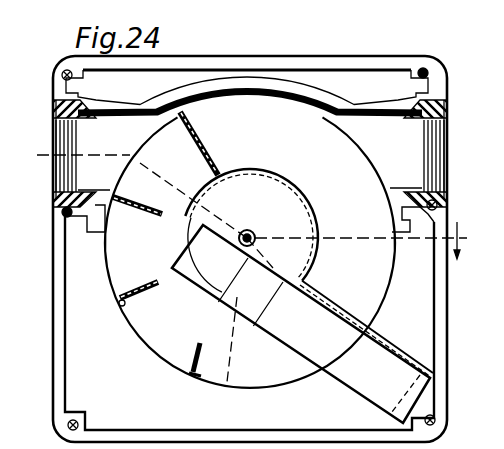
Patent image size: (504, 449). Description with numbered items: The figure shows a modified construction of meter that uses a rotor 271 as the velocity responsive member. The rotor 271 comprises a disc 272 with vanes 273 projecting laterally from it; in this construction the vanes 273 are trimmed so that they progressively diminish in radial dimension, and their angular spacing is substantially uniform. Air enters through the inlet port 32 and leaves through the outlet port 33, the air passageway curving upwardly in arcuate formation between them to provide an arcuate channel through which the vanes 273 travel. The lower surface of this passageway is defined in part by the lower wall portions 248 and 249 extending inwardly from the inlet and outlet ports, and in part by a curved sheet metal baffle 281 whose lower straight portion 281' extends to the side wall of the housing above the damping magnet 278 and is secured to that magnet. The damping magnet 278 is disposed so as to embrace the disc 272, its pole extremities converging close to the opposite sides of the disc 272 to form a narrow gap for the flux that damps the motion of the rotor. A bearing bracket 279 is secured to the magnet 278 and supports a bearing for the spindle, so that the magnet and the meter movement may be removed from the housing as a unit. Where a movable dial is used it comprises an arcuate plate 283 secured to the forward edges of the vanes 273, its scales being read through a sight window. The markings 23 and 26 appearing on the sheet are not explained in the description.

The housing 23 is at (247, 55).
The section line 26 is at (252, 201).
The inlet port 32 is at (47, 173).
The outlet port 33 is at (440, 137).
The lower wall portion 248 is at (82, 278).
The lower wall portion 249 is at (413, 269).
The rotor 271 is at (165, 137).
The disc 272 is at (157, 352).
The vane 273 is at (134, 284).
The damping magnet 278 is at (342, 370).
The bearing bracket 279 is at (257, 238).
The curved sheet metal baffle 281 is at (273, 230).
The lower straight portion 281' is at (366, 329).
The arcuate plate 283 is at (302, 193).